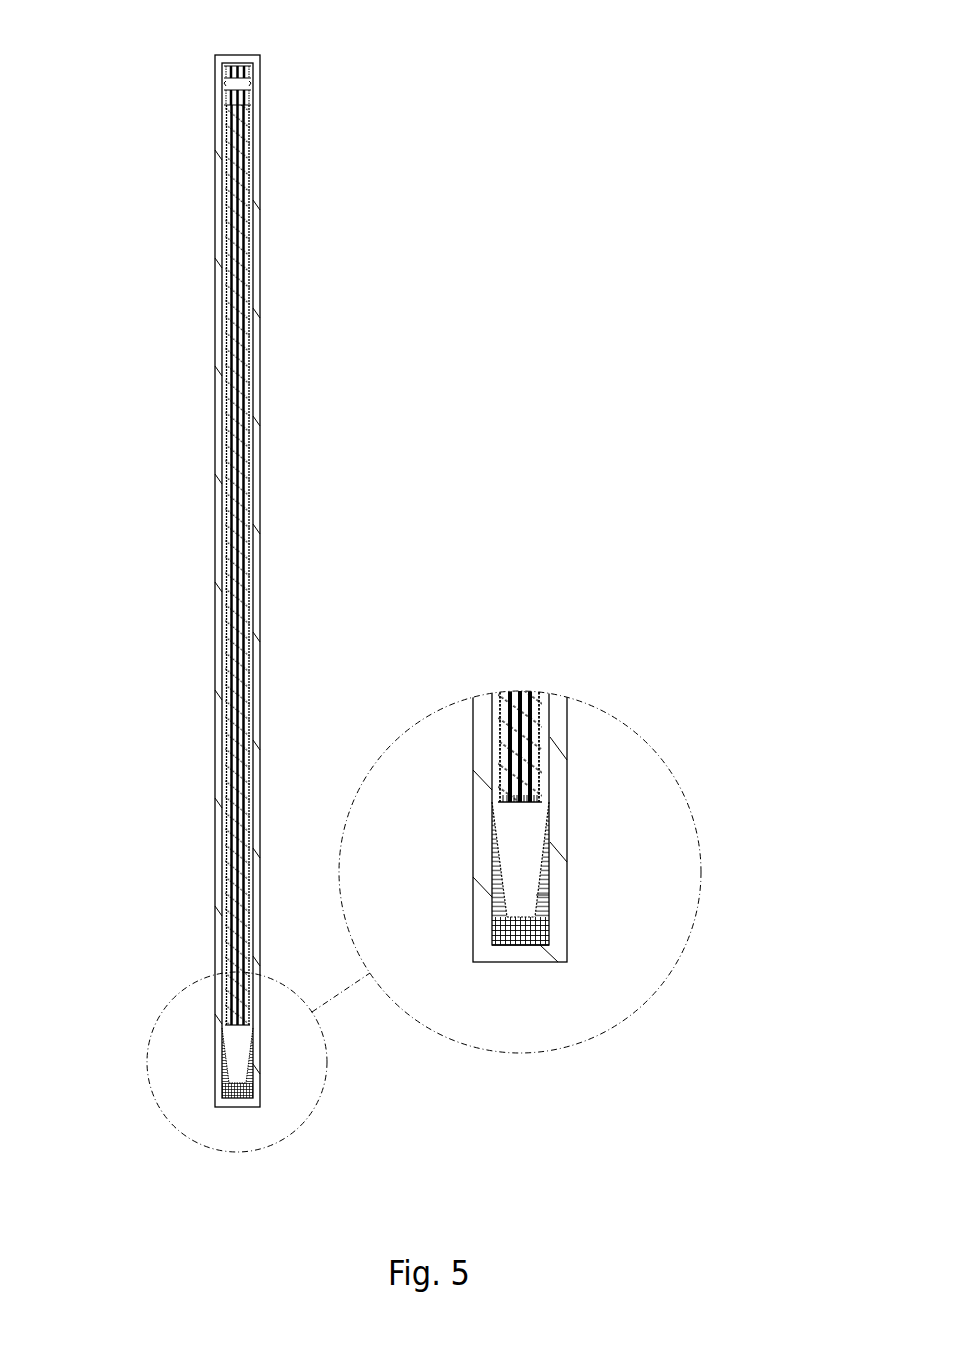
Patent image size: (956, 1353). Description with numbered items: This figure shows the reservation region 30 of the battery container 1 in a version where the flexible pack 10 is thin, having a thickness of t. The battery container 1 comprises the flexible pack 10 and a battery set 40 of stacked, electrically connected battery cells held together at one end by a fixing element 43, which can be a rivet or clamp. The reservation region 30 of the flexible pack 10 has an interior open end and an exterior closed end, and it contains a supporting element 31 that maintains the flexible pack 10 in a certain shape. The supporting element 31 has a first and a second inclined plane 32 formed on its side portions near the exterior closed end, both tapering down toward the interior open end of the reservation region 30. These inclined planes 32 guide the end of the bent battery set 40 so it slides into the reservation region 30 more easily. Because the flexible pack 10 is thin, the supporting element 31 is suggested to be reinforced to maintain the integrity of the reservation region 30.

The battery container 1 is at (148, 342).
The flexible pack 10 is at (255, 177).
The reservation region 30 is at (240, 1056).
The supporting element 31 is at (530, 927).
The inclined plane 32 is at (497, 876).
The battery set 40 is at (248, 46).
The fixing element 43 is at (242, 83).
The thickness t is at (545, 895).